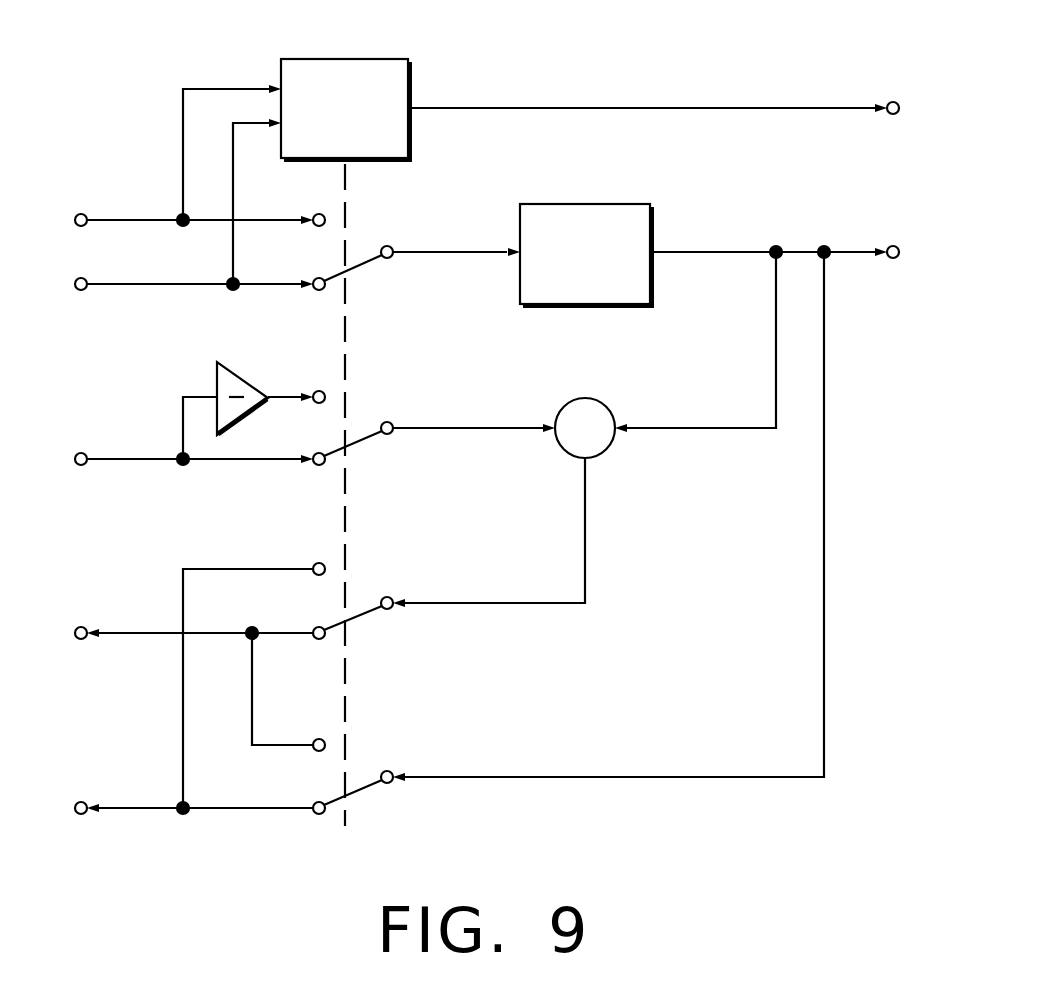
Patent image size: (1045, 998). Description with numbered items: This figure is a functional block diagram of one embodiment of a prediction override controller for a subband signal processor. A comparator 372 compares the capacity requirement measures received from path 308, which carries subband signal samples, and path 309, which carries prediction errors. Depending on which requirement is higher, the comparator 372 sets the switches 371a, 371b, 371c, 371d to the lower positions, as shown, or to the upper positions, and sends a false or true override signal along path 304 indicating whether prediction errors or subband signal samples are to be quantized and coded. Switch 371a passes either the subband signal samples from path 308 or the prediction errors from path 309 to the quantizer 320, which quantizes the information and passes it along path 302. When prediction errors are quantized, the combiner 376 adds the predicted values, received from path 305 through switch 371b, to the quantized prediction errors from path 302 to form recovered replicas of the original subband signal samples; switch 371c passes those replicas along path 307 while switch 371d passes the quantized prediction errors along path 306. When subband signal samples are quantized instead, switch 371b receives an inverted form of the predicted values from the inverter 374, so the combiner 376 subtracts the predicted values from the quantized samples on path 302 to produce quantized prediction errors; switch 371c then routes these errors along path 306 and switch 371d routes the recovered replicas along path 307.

The comparator 372 is at (327, 59).
The path 304 is at (624, 107).
The path 308 is at (153, 215).
The path 309 is at (153, 279).
The switch 371a is at (388, 245).
The quantizer 320 is at (563, 203).
The path 302 is at (800, 250).
The inverter 374 is at (240, 372).
The path 305 is at (153, 455).
The switch 371b is at (388, 421).
The combiner 376 is at (585, 397).
The switch 371c is at (388, 596).
The path 307 is at (153, 630).
The switch 371d is at (388, 770).
The path 306 is at (153, 805).